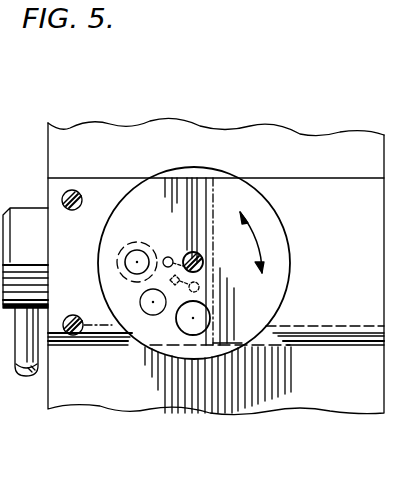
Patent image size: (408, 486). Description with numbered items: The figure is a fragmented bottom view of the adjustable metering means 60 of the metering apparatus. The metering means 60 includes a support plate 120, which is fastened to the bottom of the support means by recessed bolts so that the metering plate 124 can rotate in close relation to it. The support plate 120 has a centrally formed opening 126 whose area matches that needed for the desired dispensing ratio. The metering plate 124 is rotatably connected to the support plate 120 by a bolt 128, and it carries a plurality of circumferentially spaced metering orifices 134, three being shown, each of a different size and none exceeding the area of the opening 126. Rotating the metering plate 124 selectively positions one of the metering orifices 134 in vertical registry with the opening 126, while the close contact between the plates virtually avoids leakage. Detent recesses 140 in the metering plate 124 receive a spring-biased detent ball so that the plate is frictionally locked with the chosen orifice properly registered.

The adjustable metering means 60 is at (229, 158).
The support plate 120 is at (301, 197).
The metering plate 124 is at (289, 272).
The opening 126 is at (121, 249).
The bolt 128 is at (186, 254).
The metering orifices 134 is at (140, 301).
The detent recesses 140 is at (200, 287).